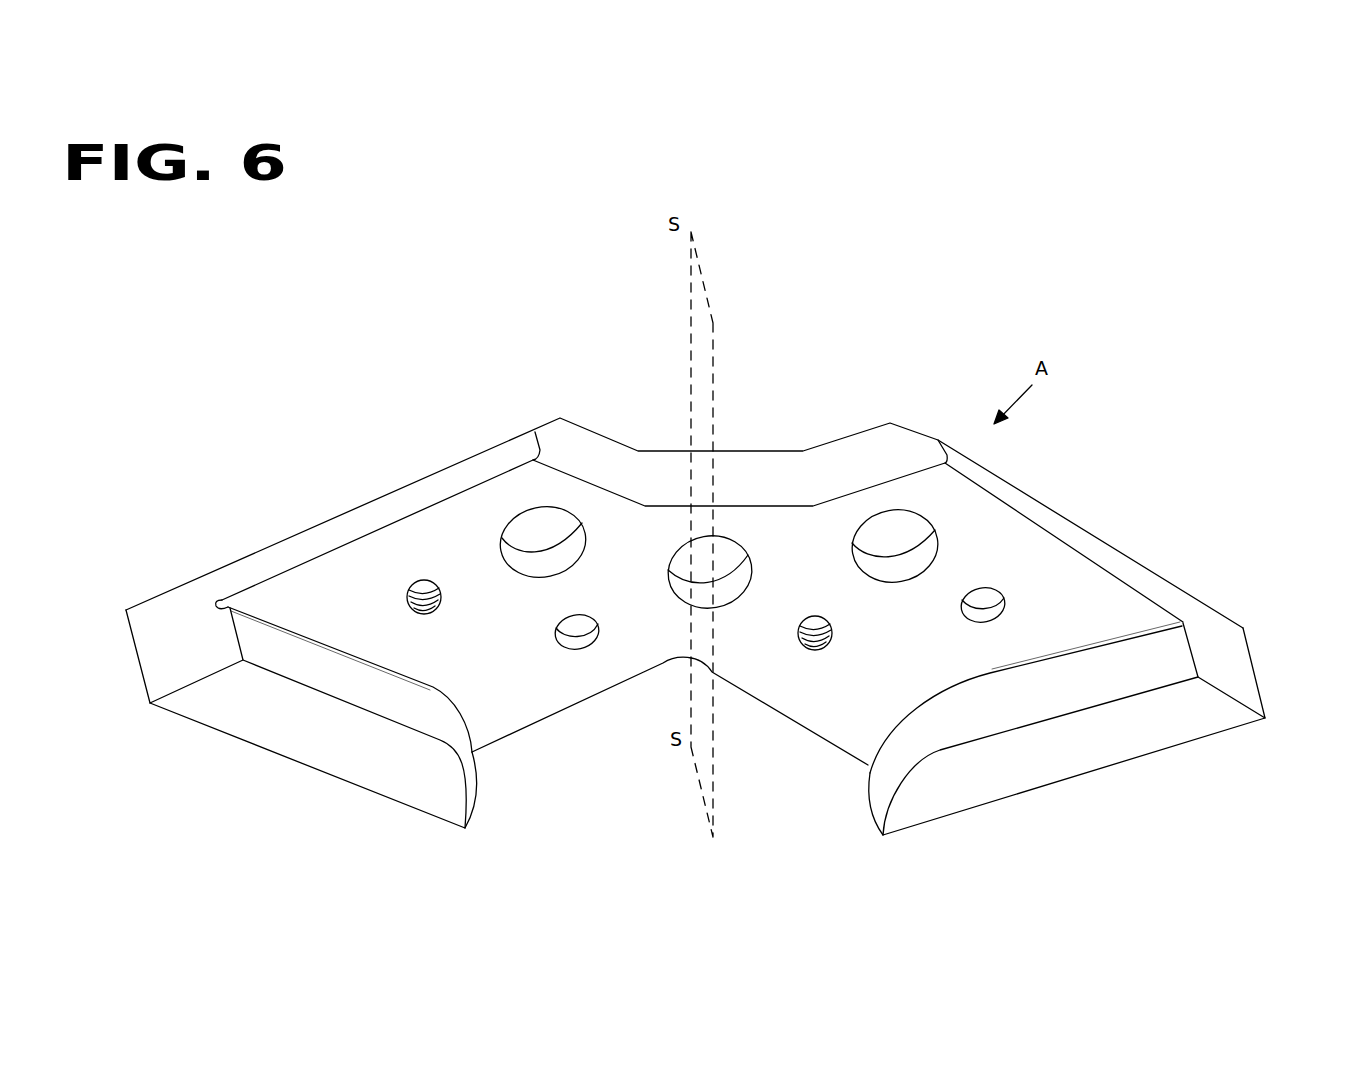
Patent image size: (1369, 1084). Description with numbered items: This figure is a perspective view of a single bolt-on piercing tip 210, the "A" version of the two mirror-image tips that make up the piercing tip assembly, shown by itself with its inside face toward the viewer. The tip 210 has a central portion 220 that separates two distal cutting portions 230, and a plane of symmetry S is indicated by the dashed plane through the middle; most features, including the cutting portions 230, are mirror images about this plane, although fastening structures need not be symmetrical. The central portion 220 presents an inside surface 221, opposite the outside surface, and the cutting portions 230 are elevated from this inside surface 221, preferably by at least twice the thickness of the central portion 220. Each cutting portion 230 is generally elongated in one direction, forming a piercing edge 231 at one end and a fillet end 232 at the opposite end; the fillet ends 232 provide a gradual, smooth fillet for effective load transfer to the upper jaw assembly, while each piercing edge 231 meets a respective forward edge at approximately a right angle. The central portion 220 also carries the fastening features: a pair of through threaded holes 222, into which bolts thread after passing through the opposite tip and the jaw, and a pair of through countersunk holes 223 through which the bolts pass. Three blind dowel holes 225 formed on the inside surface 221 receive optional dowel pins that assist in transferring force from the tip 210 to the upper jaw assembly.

The piercing tip 210 is at (701, 601).
The central portion 220 is at (467, 458).
The inside surface 221 is at (446, 538).
The through threaded hole 222 is at (405, 600).
The through countersunk hole 223 is at (578, 614).
The blind dowel hole 225 is at (533, 578).
The cutting portion 230 is at (320, 773).
The piercing edge 231 is at (137, 661).
The fillet end 232 is at (478, 758).